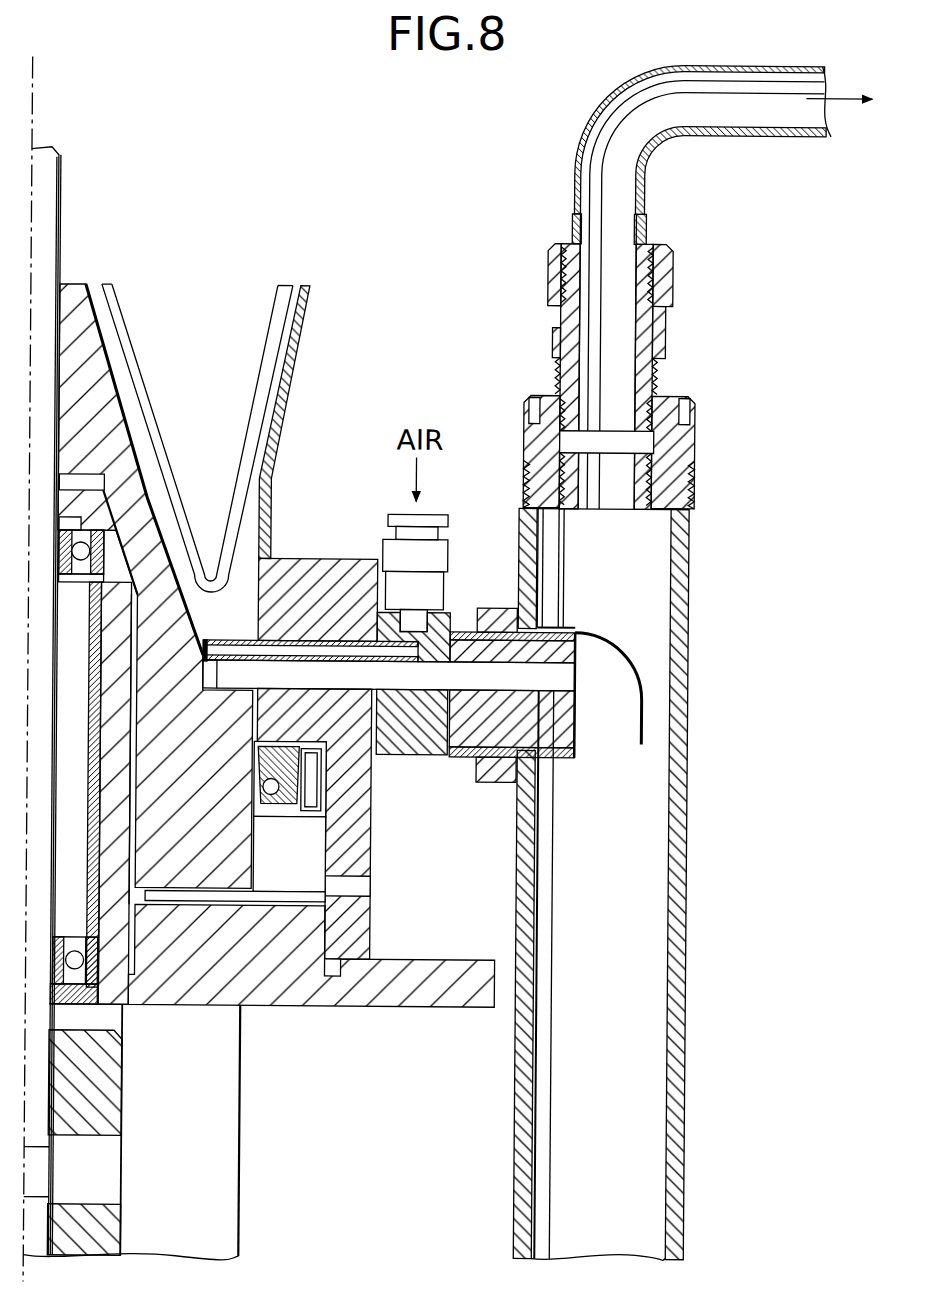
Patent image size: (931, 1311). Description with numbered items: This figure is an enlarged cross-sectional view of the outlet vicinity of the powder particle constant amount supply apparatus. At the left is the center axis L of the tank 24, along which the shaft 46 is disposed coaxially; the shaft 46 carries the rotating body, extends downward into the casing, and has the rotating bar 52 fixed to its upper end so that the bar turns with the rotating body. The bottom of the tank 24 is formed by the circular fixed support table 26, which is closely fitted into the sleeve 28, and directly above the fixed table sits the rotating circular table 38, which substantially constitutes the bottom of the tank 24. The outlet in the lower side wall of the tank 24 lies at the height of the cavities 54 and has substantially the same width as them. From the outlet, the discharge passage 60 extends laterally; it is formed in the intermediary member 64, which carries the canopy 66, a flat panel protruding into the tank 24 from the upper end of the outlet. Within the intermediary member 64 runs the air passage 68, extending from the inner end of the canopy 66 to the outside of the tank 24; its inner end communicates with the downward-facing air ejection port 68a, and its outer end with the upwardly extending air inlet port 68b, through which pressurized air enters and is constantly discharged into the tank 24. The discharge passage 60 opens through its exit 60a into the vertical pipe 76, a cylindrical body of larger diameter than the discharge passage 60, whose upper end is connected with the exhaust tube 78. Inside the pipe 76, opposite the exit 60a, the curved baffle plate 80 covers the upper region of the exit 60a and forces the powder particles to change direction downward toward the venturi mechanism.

The center axis L is at (30, 111).
The tank 24 is at (280, 440).
The circular fixed support table 26 is at (288, 968).
The sleeve 28 is at (300, 573).
The circular table 38 is at (243, 850).
The shaft 46 is at (57, 204).
The rotating bar 52 is at (276, 352).
The cavities 54 is at (237, 688).
The discharge passage 60 is at (472, 676).
The exit of the discharge passage 60a is at (578, 677).
The intermediary member 64 is at (428, 746).
The canopy 66 is at (211, 690).
The air passage 68 is at (331, 646).
The air ejection port 68a is at (239, 673).
The air inlet port 68b is at (413, 630).
The vertical pipe 76 is at (673, 841).
The exhaust tube 78 is at (690, 132).
The baffle plate 80 is at (645, 662).